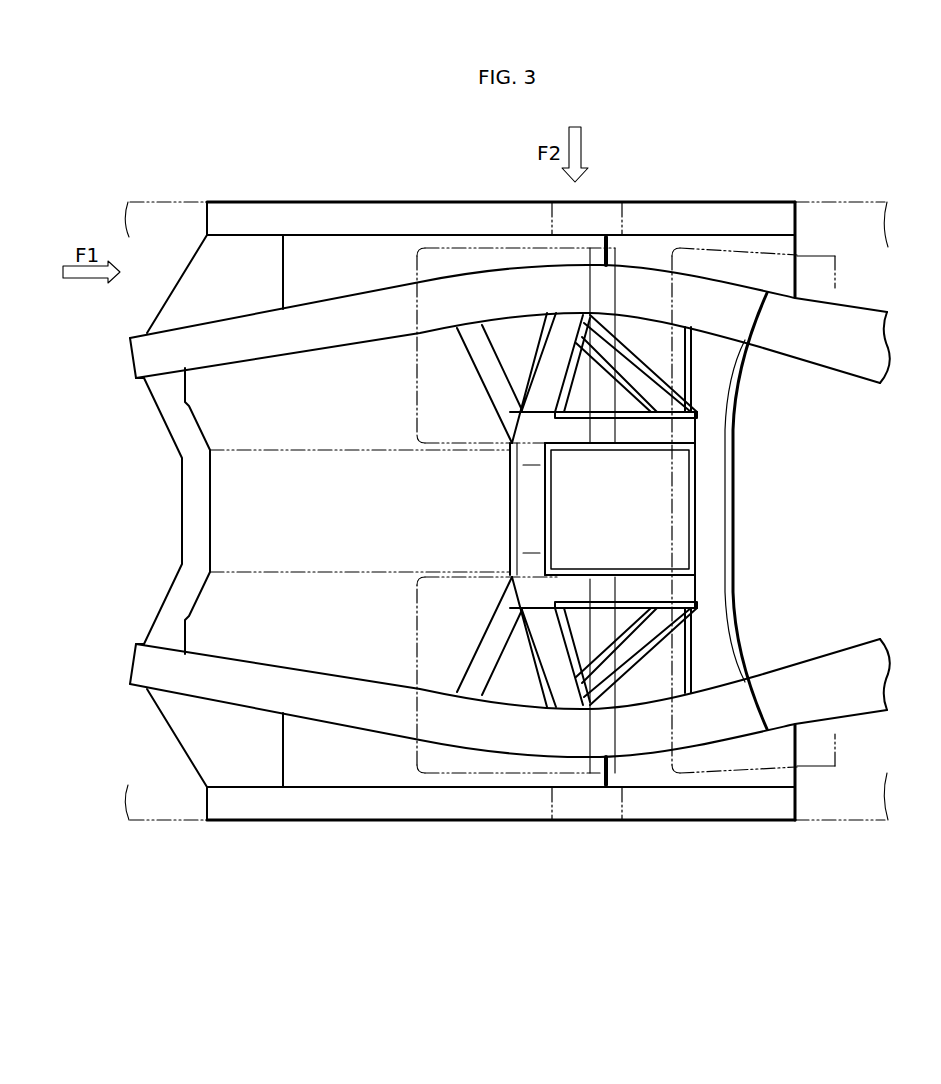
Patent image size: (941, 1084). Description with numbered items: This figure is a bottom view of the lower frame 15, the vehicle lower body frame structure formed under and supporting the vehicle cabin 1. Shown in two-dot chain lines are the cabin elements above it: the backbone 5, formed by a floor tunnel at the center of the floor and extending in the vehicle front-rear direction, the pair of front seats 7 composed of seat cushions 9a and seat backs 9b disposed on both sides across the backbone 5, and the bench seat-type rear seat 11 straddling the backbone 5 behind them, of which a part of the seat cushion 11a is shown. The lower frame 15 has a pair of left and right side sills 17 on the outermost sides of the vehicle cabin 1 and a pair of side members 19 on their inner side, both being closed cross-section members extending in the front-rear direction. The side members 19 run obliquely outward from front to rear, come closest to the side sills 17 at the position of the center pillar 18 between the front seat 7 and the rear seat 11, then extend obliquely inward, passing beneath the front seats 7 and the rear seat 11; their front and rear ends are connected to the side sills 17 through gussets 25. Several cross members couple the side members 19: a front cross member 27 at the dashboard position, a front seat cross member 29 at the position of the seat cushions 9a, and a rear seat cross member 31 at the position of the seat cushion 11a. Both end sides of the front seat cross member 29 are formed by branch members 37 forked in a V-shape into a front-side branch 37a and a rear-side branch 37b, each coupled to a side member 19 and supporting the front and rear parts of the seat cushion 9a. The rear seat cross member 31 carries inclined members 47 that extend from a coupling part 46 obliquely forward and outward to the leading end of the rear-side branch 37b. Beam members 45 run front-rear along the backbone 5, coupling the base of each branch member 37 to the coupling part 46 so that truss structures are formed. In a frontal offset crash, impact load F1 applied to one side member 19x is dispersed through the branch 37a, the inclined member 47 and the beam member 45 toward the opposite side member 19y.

The vehicle cabin 1 is at (863, 203).
The backbone 5 is at (303, 450).
The front seats 7 is at (507, 240).
The seat cushion 9a is at (440, 248).
The seat back 9b is at (608, 263).
The rear seat 11 is at (745, 782).
The seat cushion 11a is at (818, 767).
The lower frame 15 is at (485, 831).
The side sills 17 is at (396, 202).
The center pillar 18 is at (622, 219).
The side members 19 is at (510, 513).
The side member 19x is at (332, 298).
The side member 19y is at (332, 723).
The gussets 25 is at (172, 292).
The front cross member 27 is at (197, 420).
The front seat cross member 29 is at (508, 507).
The rear seat cross member 31 is at (736, 508).
The branch members 37 is at (498, 415).
The front-side branch 37a is at (470, 357).
The rear-side branch 37b is at (573, 395).
The beam members 45 is at (652, 455).
The coupling part 46 is at (740, 410).
The inclined members 47 is at (653, 368).